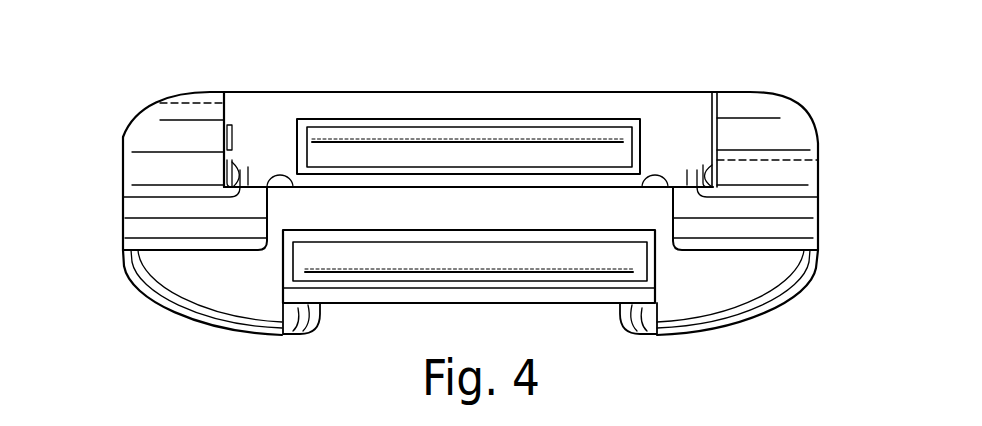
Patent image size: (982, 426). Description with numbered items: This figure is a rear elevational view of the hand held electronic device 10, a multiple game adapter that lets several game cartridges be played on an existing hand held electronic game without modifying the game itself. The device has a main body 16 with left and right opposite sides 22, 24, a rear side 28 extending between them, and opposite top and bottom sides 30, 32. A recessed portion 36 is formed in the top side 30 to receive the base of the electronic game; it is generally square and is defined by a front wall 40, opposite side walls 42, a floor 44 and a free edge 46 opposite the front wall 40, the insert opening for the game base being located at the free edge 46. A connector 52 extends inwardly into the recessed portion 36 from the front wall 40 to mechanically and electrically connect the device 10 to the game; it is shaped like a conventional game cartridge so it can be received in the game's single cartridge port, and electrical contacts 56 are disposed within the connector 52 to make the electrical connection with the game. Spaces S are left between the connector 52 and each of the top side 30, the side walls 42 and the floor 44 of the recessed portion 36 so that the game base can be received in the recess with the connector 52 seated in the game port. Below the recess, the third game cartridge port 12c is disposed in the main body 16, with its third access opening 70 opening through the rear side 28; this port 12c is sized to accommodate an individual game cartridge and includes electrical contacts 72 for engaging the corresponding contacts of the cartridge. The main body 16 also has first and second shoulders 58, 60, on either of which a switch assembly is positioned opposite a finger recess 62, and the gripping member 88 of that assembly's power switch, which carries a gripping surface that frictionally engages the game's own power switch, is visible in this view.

The hand held electronic device 10 is at (582, 80).
The third game cartridge port 12c is at (397, 243).
The main body 16 is at (125, 112).
The left side 22 is at (818, 231).
The right side 24 is at (123, 232).
The rear side 28 is at (665, 228).
The top side 30 is at (493, 92).
The bottom side 32 is at (288, 335).
The recessed portion 36 is at (705, 113).
The front wall 40 is at (352, 107).
The side walls 42 is at (123, 198).
The floor 44 is at (282, 177).
The free edge 46 is at (648, 190).
The connector 52 is at (412, 120).
The electrical contacts 56 is at (558, 147).
The first shoulder 58 is at (752, 93).
The second shoulder 60 is at (183, 96).
The finger recess 62 is at (778, 158).
The third access opening 70 is at (310, 142).
The electrical contacts 72 is at (620, 270).
The gripping member 88 is at (236, 140).
The spaces S is at (447, 161).